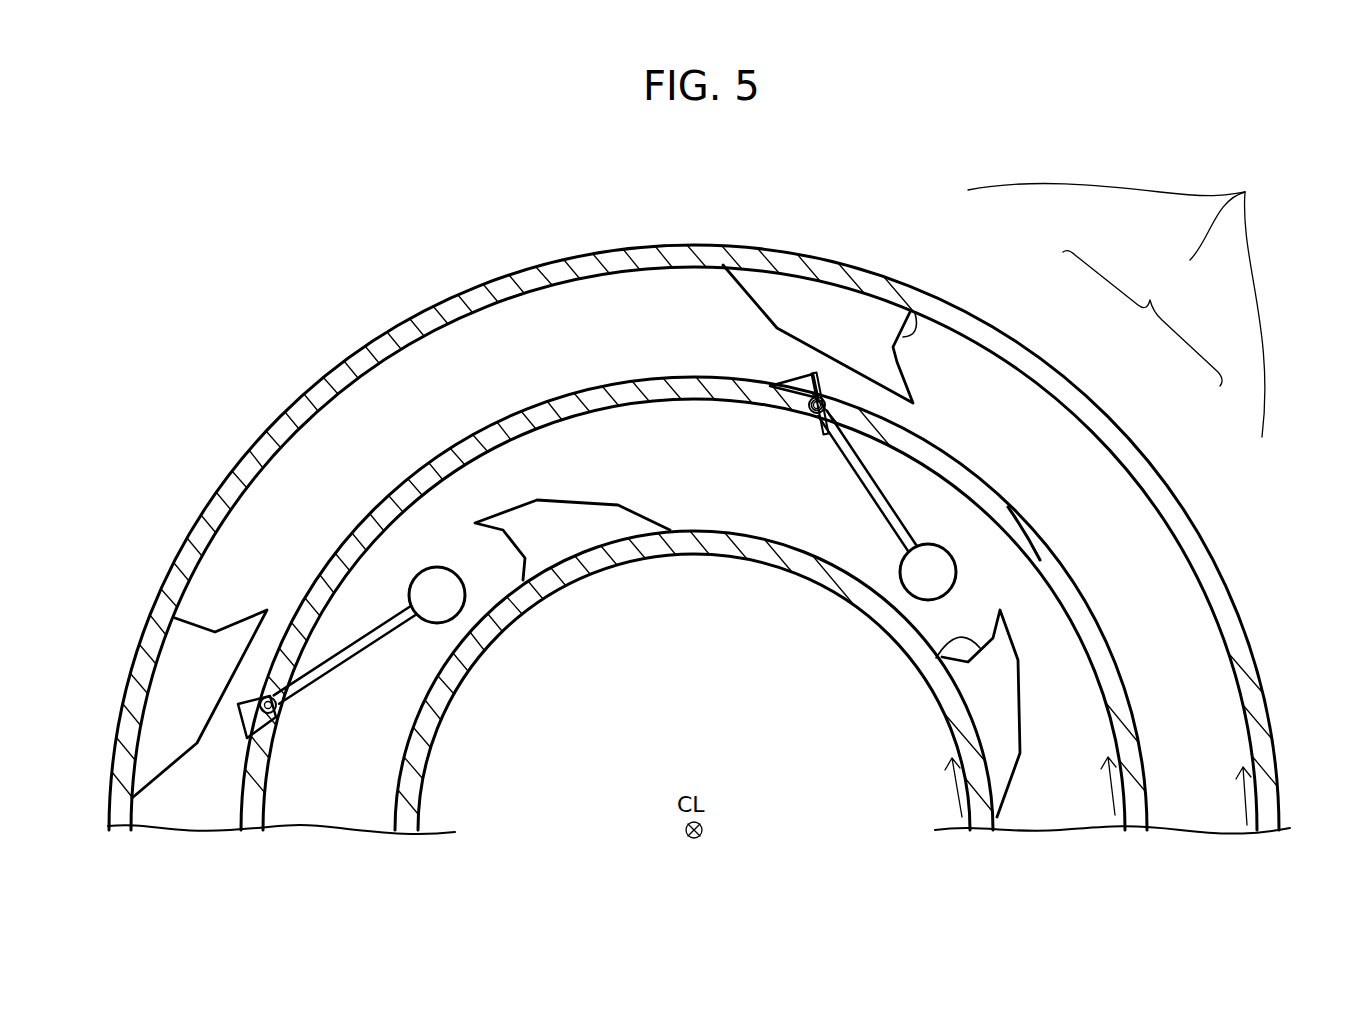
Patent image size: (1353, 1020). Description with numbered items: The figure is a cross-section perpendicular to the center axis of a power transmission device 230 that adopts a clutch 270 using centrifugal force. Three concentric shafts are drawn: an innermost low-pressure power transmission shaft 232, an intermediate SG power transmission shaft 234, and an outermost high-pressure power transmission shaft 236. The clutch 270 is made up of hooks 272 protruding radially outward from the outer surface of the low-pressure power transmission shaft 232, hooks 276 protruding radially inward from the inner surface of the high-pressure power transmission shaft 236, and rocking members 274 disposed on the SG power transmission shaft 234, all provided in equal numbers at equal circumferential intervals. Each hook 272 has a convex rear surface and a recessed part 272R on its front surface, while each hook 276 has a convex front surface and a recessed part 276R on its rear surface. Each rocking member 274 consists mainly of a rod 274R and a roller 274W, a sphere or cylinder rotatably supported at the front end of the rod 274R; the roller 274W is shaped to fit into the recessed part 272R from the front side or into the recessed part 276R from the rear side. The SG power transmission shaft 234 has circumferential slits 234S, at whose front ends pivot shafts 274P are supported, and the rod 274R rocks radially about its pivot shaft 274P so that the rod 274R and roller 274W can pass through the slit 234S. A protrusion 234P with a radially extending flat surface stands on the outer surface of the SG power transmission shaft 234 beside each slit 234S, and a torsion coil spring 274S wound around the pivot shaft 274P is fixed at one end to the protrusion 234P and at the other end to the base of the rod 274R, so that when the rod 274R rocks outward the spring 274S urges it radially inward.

The power transmission device 230 is at (314, 325).
The low-pressure power transmission shaft 232 is at (996, 816).
The SG power transmission shaft 234 is at (1148, 811).
The protrusion 234P is at (797, 384).
The slit 234S is at (1030, 540).
The high-pressure power transmission shaft 236 is at (1280, 828).
The clutch 270 is at (1131, 302).
The hook 272 is at (1005, 662).
The recessed part 272R is at (945, 655).
The rocking member 274 is at (1142, 318).
The torsion coil spring 274S is at (827, 378).
The pivot shaft 274P is at (828, 402).
The rod 274R is at (882, 487).
The roller 274W is at (952, 552).
The hook 276 is at (848, 308).
The recessed part 276R is at (906, 332).